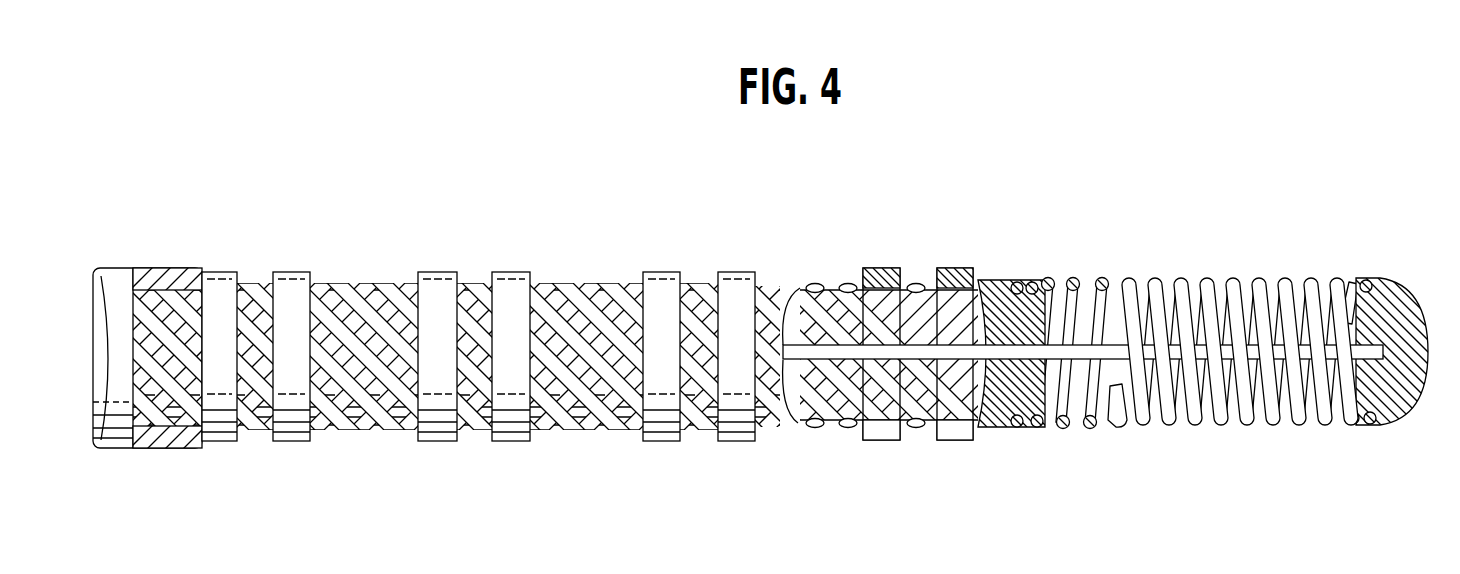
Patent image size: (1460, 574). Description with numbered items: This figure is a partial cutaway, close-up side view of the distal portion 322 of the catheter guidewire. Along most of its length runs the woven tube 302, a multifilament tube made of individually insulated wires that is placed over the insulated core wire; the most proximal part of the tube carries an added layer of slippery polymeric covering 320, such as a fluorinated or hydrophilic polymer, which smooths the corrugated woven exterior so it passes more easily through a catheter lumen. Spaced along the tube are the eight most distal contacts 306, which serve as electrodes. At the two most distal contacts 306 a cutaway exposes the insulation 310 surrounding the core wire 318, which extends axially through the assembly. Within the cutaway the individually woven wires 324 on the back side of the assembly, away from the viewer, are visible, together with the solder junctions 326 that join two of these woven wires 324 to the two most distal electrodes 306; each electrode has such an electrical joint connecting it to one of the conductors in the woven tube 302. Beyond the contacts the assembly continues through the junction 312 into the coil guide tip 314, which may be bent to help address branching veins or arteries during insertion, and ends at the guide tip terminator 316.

The woven tube 302 is at (381, 278).
The contacts 306 is at (292, 433).
The insulation 310 is at (812, 400).
The junction 312 is at (1028, 398).
The coil guide tip 314 is at (1121, 353).
The guide tip terminator 316 is at (1395, 408).
The core wire 318 is at (840, 357).
The covering 320 is at (167, 272).
The distal portion 322 is at (1120, 168).
The woven wires 324 is at (853, 313).
The solder junctions 326 is at (905, 278).